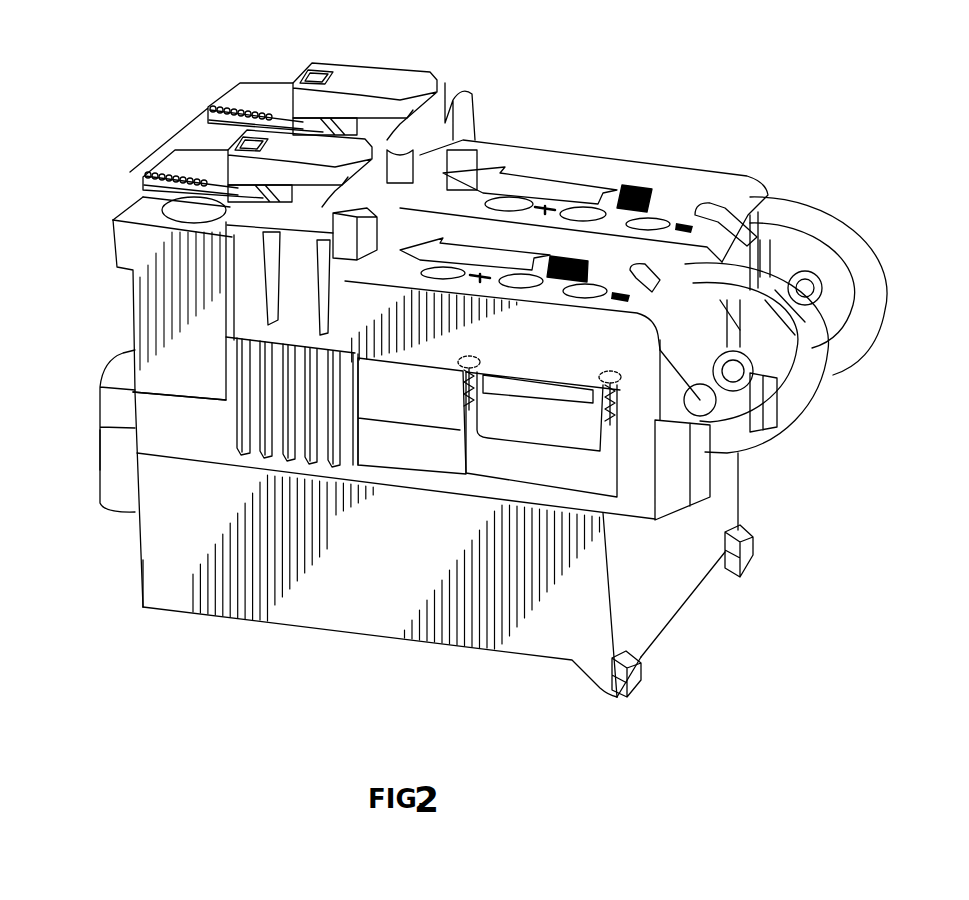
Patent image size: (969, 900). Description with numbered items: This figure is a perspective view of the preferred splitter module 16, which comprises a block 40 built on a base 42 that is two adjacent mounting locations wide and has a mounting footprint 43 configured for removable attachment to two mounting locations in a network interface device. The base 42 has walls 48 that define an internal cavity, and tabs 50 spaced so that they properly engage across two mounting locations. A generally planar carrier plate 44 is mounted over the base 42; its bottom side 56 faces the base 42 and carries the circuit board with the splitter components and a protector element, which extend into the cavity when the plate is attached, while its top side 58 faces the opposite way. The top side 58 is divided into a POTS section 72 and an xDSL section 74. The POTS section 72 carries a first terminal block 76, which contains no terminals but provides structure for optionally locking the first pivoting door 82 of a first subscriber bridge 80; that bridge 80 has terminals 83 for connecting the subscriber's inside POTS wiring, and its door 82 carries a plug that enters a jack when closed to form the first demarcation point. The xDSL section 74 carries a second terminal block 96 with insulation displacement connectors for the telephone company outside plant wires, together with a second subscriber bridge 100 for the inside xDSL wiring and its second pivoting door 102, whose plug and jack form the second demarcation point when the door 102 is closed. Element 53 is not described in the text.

The splitter module 16 is at (250, 654).
The block 40 is at (532, 640).
The base 42 is at (390, 622).
The mounting footprint 43 is at (765, 572).
The carrier plate 44 is at (157, 438).
The walls 48 is at (200, 565).
The tabs 50 is at (753, 560).
The block lower edge 53 is at (173, 393).
The bottom side 56 is at (340, 485).
The top side 58 is at (407, 462).
The POTS section 72 is at (148, 153).
The xDSL section 74 is at (205, 88).
The first terminal block 76 is at (123, 240).
The first subscriber bridge 80 is at (640, 440).
The first pivoting door 82 is at (612, 258).
The terminals 83 is at (460, 368).
The second terminal block 96 is at (207, 125).
The second subscriber bridge 100 is at (755, 255).
The second pivoting door 102 is at (504, 150).